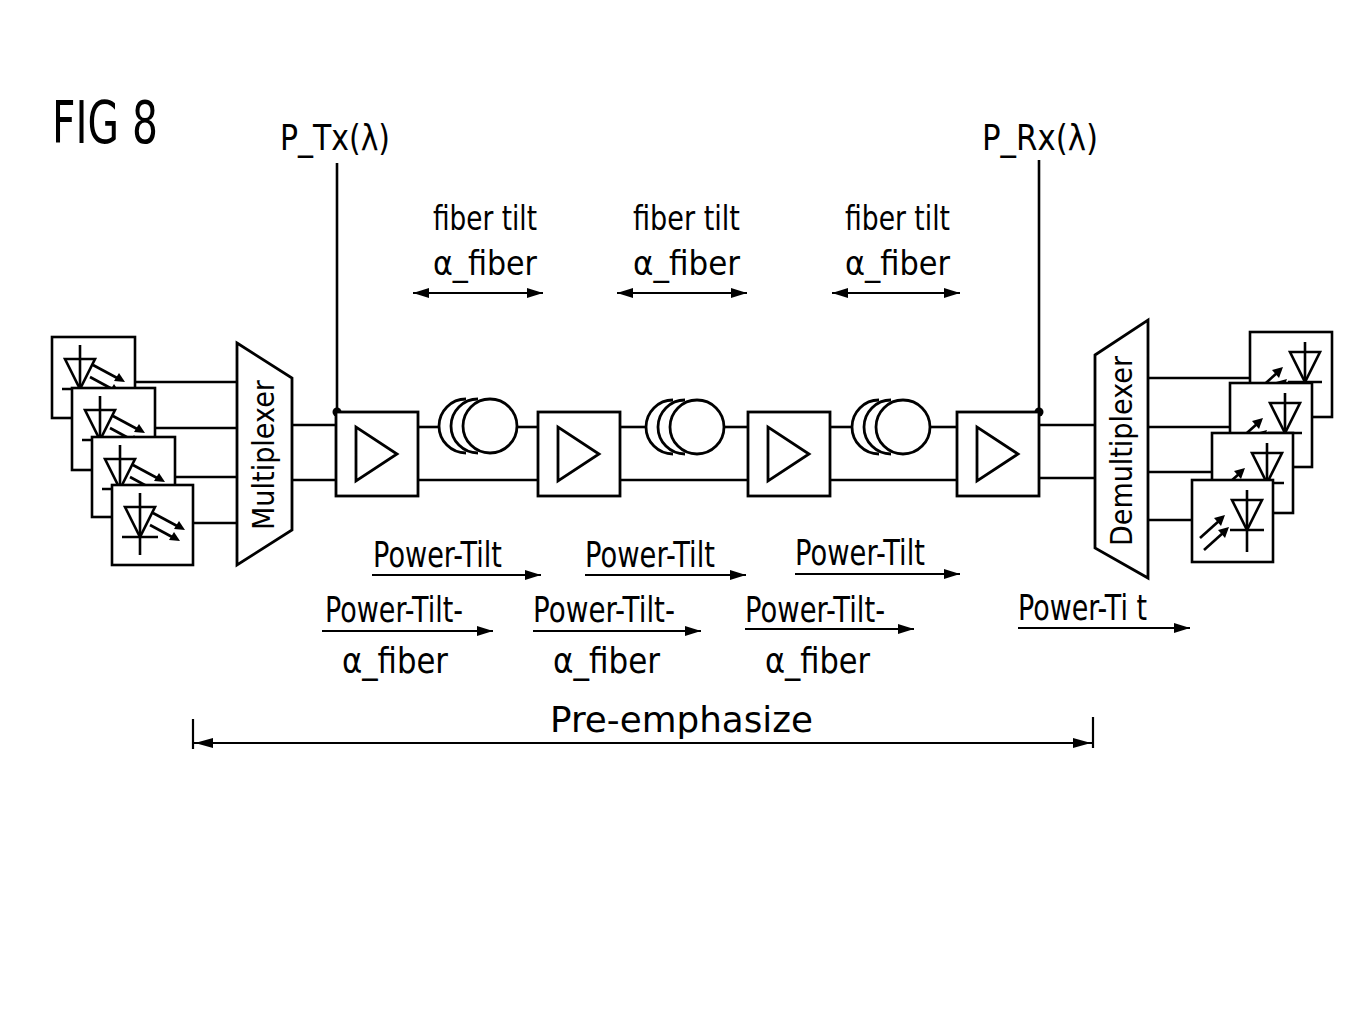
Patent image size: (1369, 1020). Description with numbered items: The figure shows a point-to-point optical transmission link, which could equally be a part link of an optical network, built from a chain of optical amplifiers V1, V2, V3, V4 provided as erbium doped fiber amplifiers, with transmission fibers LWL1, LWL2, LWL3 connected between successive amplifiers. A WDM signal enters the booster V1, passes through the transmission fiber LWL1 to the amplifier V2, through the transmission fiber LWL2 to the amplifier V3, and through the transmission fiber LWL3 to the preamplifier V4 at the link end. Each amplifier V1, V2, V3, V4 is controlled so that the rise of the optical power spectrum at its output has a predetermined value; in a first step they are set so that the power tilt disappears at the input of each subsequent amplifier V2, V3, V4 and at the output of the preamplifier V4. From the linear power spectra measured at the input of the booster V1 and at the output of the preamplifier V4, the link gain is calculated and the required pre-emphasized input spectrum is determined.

The optical amplifier V1 is at (372, 409).
The optical amplifier V2 is at (590, 409).
The optical amplifier V3 is at (800, 409).
The optical amplifier V4 is at (994, 409).
The transmission fiber LWL1 is at (500, 398).
The transmission fiber LWL2 is at (700, 399).
The transmission fiber LWL3 is at (906, 399).